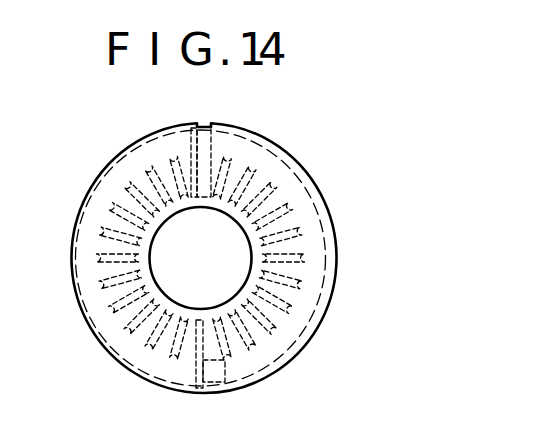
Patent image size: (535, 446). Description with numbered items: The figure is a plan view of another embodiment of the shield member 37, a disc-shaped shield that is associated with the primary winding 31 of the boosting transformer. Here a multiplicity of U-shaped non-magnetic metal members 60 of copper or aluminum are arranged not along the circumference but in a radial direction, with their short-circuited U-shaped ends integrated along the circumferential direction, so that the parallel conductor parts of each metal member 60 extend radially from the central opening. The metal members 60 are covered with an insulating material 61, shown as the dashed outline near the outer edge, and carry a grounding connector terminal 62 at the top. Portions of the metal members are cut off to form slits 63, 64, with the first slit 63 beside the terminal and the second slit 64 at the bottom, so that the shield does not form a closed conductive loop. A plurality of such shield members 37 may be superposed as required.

The primary winding 31 is at (196, 388).
The shield member 37 is at (357, 241).
The non-magnetic metal member 60 is at (313, 210).
The insulating material 61 is at (295, 175).
The grounding connector terminal 62 is at (207, 121).
The slit 63 is at (188, 147).
The slit 64 is at (225, 378).